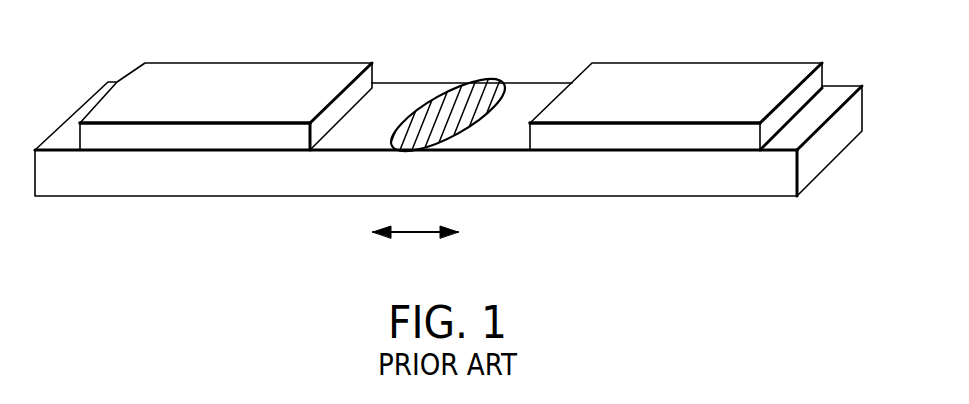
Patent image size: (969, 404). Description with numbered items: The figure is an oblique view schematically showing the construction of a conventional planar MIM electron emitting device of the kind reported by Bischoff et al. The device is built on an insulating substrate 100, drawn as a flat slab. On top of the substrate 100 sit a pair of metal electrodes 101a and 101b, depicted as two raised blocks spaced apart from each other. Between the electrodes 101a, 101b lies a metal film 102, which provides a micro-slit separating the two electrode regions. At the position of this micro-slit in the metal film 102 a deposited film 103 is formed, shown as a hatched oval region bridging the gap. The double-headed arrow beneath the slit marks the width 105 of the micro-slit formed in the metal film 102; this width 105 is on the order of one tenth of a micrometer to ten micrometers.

The insulating substrate 100 is at (753, 180).
The metal electrode 101a is at (185, 70).
The metal electrode 101b is at (768, 70).
The metal film 102 is at (410, 92).
The deposited film 103 is at (475, 98).
The width of the micro-slit 105 is at (418, 232).